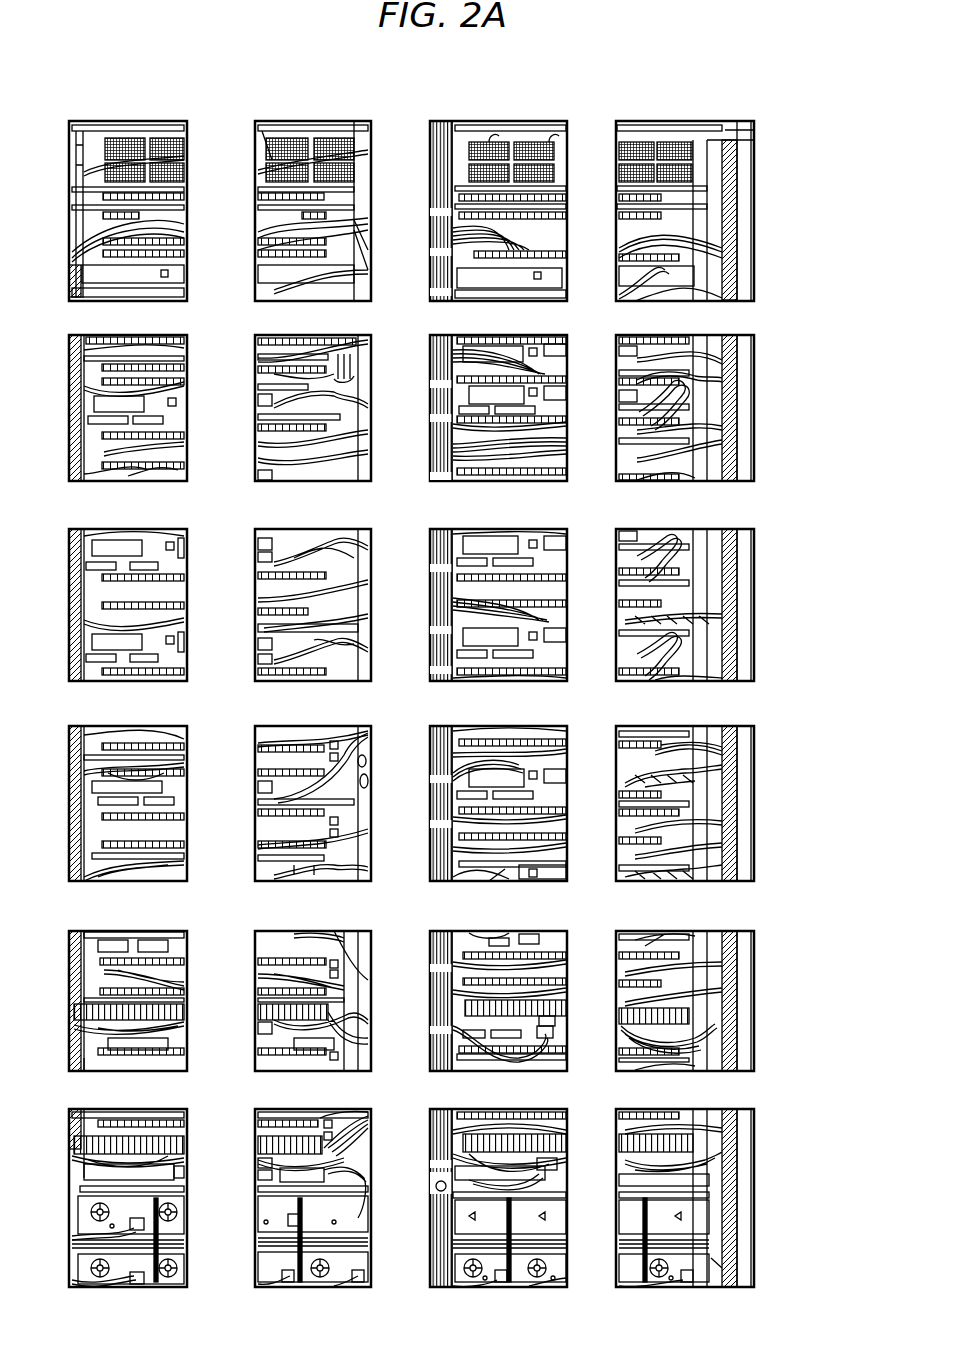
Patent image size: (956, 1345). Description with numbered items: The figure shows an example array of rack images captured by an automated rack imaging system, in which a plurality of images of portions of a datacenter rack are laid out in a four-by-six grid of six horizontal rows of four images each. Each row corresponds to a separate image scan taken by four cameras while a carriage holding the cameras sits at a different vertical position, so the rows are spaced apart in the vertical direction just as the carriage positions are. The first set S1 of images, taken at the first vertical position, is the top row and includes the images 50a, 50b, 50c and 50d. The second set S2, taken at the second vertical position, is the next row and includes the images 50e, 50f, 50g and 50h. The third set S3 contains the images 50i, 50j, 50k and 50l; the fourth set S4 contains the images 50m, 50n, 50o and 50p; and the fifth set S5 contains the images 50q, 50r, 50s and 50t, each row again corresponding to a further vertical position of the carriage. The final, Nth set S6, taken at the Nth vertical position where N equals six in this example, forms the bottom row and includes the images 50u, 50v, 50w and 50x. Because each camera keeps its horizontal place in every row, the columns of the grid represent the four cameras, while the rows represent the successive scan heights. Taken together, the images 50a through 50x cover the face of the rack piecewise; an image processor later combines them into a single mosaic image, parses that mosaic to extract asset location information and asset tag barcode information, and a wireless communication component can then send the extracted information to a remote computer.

The image 50a is at (126, 120).
The image 50b is at (315, 120).
The image 50c is at (500, 120).
The image 50d is at (686, 120).
The image 50e is at (129, 334).
The image 50f is at (315, 334).
The image 50g is at (500, 334).
The image 50h is at (676, 334).
The image 50i is at (129, 528).
The image 50j is at (315, 528).
The image 50k is at (500, 528).
The image 50l is at (676, 528).
The image 50m is at (129, 725).
The image 50n is at (315, 725).
The image 50o is at (500, 725).
The image 50p is at (676, 725).
The image 50q is at (129, 930).
The image 50r is at (315, 930).
The image 50s is at (500, 930).
The image 50t is at (676, 930).
The image 50u is at (129, 1108).
The image 50v is at (315, 1108).
The image 50w is at (500, 1108).
The image 50x is at (676, 1108).
The first set of images S1 is at (757, 120).
The second set of images S2 is at (757, 334).
The third set of images S3 is at (757, 528).
The fourth set of images S4 is at (757, 725).
The fifth set of images S5 is at (757, 930).
The Nth set of images S6 is at (757, 1108).